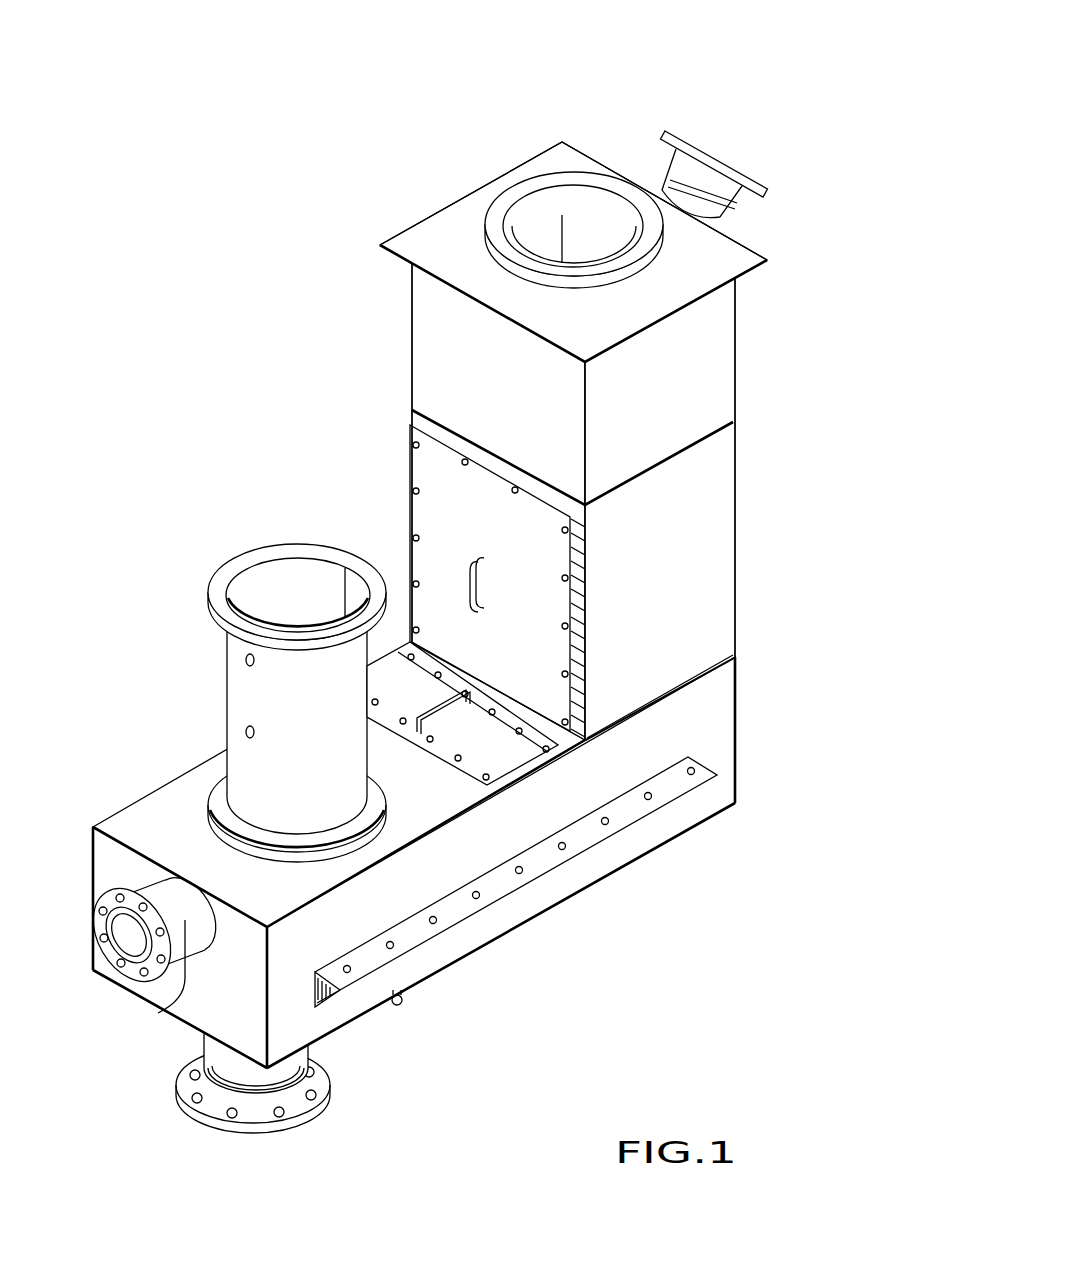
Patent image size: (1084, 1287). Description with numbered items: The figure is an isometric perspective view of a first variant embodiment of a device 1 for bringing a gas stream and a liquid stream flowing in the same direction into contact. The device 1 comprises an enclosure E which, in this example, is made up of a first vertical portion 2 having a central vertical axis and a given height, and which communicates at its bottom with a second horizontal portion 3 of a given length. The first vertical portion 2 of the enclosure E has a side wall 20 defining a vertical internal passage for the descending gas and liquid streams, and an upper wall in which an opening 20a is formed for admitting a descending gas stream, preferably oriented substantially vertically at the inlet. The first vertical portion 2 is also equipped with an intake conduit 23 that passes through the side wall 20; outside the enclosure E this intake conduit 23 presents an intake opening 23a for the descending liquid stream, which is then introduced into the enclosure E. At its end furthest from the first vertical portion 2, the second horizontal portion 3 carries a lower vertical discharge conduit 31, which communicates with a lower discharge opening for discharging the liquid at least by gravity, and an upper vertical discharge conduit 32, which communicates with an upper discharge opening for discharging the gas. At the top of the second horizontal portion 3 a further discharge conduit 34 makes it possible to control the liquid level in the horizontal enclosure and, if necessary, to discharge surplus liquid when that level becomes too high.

The device 1 is at (489, 573).
The first vertical portion 2 is at (626, 265).
The second horizontal portion 3 is at (421, 841).
The side wall 20 is at (487, 537).
The opening 20a is at (591, 222).
The intake conduit 23 is at (741, 125).
The intake opening 23a is at (716, 152).
The lower vertical discharge conduit 31 is at (303, 1082).
The upper vertical discharge conduit 32 is at (260, 717).
The discharge conduit 34 is at (188, 912).
The enclosure E is at (760, 710).